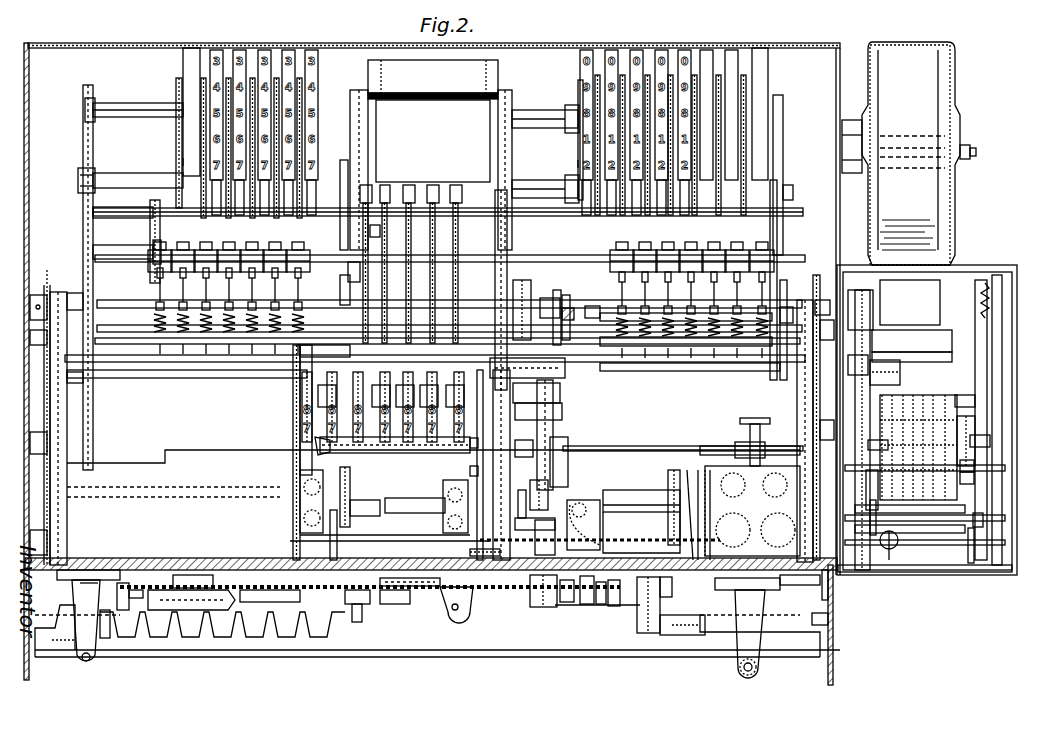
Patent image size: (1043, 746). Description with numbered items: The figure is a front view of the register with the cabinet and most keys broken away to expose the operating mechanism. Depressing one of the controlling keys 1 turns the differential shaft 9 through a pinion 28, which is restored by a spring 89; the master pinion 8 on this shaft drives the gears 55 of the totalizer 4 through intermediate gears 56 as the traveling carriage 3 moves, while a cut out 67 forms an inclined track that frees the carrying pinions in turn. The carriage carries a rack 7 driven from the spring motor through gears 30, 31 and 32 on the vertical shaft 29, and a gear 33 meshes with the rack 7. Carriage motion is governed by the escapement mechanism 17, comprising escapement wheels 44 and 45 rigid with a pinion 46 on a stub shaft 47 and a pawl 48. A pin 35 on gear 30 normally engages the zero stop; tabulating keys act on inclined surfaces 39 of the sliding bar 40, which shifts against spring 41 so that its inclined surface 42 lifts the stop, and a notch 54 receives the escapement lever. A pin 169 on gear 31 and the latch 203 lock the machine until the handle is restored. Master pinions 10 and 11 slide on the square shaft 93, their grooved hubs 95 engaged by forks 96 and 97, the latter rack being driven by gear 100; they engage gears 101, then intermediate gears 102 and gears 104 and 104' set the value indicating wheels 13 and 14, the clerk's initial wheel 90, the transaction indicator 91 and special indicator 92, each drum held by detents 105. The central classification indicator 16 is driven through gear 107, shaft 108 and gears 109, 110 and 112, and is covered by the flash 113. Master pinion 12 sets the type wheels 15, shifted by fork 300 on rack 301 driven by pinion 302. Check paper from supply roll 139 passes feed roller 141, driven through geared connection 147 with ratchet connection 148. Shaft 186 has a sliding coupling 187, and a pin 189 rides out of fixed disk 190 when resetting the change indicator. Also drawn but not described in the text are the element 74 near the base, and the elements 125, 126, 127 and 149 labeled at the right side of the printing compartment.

The controlling keys 1 is at (44, 420).
The traveling carriage 3 is at (47, 135).
The totalizer 4 is at (44, 318).
The rack 7 is at (646, 552).
The master pinion 8 is at (344, 522).
The differential shaft 9 is at (648, 505).
The master pinion 10 is at (352, 268).
The master pinion 11 is at (515, 275).
The master pinion 12 is at (875, 522).
The value indicating wheels 13 is at (240, 58).
The value indicating wheels 14 is at (680, 58).
The type wheels 15 is at (965, 420).
The central classification indicator 16 is at (478, 160).
The escapement mechanism 17 is at (598, 605).
The pinion 28 is at (545, 488).
The vertical shaft 29 is at (565, 393).
The gear 30 is at (222, 588).
The gear 31 is at (290, 585).
The gear 32 is at (528, 595).
The gear 33 is at (520, 558).
The pin 35 is at (130, 590).
The inclined surfaces 39 is at (108, 635).
The sliding bar 40 is at (258, 645).
The spring 41 is at (70, 640).
The inclined surface 42 is at (48, 628).
The escapement wheel 44 is at (644, 605).
The escapement wheel 45 is at (610, 608).
The pinion 46 is at (585, 595).
The stub shaft 47 is at (600, 605).
The pawl 48 is at (682, 606).
The notch 54 is at (645, 640).
The gears 55 is at (298, 425).
The intermediate gears 56 is at (398, 513).
The cut out 67 is at (318, 448).
The bracket 74 is at (790, 560).
The spring 89 is at (525, 490).
The clerk's initial wheel 90 is at (192, 58).
The transaction indicator 91 is at (736, 60).
The special indicator 92 is at (762, 60).
The square shaft 93 is at (573, 315).
The grooved hubs 95 is at (340, 281).
The fork 96 is at (300, 355).
The fork 97 is at (560, 333).
The gear 100 is at (580, 352).
The gears 101 is at (158, 288).
The intermediate gears 102 is at (183, 161).
The gears 104 is at (560, 139).
The gears 104' is at (161, 142).
The spring actuated detents 105 is at (150, 276).
The gear 107 is at (153, 230).
The shaft 108 is at (360, 218).
The gear 109 is at (375, 231).
The gear 110 is at (372, 172).
The gear 112 is at (372, 137).
The flash 113 is at (388, 62).
The lever 125 is at (975, 465).
The lever 126 is at (975, 478).
The arm 127 is at (985, 440).
The supply roll 139 is at (935, 75).
The feed roller 141 is at (910, 375).
The geared connection 147 is at (852, 355).
The ratchet connection 148 is at (880, 340).
The arm 149 is at (955, 400).
The pin 169 is at (372, 600).
The shaft 186 is at (700, 447).
The sliding coupling 187 is at (535, 445).
The pin 189 is at (368, 676).
The fixed disk 190 is at (486, 433).
The latch 203 is at (835, 615).
The fork 300 is at (837, 572).
The rack 301 is at (470, 553).
The pinion 302 is at (527, 589).